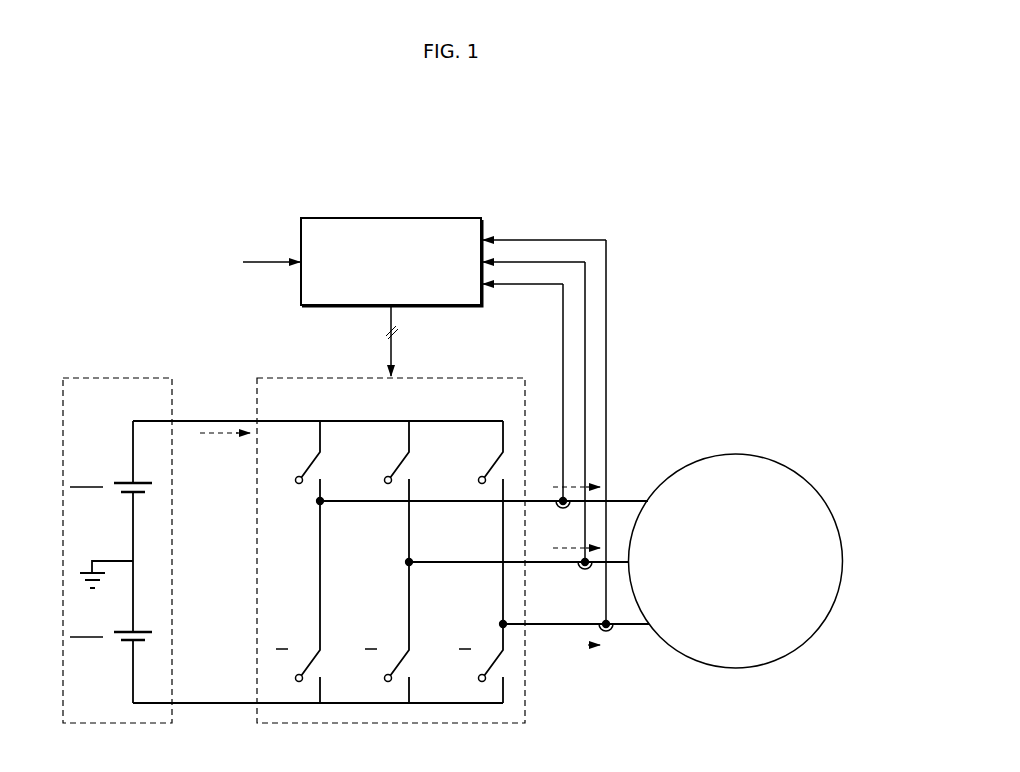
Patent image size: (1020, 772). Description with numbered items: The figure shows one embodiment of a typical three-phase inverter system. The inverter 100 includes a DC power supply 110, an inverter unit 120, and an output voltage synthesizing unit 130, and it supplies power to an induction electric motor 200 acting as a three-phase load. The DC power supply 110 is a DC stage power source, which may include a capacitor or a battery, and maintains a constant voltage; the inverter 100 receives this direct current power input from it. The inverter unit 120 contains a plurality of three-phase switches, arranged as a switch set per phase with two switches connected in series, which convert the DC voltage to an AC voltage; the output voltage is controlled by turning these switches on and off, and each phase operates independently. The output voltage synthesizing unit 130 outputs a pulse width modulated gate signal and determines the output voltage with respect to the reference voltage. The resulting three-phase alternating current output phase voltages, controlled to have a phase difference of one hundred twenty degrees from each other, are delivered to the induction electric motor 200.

The inverter 100 is at (573, 158).
The DC power supply 110 is at (118, 378).
The inverter unit 120 is at (466, 378).
The output voltage synthesizing unit 130 is at (430, 218).
The induction electric motor 200 is at (733, 454).